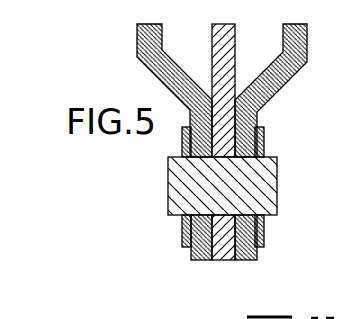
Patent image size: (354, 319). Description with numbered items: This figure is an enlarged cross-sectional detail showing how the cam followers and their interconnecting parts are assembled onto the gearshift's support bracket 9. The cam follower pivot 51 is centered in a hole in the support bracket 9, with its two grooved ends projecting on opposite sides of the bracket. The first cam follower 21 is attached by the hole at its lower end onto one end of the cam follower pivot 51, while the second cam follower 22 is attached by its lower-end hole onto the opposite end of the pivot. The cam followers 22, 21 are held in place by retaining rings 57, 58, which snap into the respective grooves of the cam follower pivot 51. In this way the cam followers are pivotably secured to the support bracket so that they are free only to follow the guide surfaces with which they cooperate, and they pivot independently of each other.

The support bracket 9 is at (235, 45).
The first cam follower 21 is at (279, 93).
The second cam follower 22 is at (137, 54).
The cam follower pivot 51 is at (168, 186).
The retaining ring 57 is at (182, 236).
The retaining ring 58 is at (264, 236).